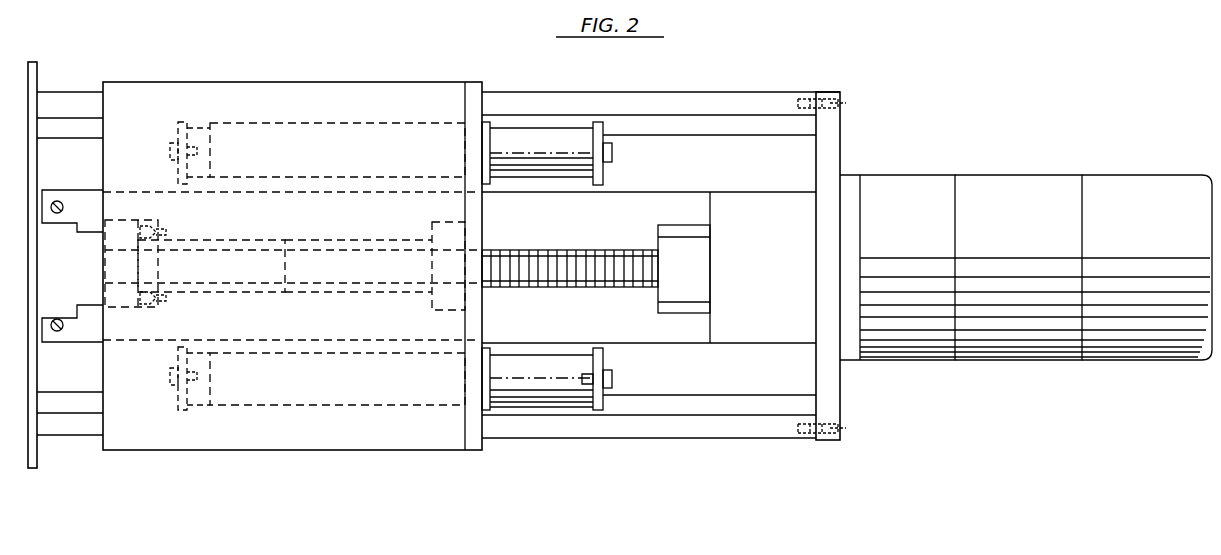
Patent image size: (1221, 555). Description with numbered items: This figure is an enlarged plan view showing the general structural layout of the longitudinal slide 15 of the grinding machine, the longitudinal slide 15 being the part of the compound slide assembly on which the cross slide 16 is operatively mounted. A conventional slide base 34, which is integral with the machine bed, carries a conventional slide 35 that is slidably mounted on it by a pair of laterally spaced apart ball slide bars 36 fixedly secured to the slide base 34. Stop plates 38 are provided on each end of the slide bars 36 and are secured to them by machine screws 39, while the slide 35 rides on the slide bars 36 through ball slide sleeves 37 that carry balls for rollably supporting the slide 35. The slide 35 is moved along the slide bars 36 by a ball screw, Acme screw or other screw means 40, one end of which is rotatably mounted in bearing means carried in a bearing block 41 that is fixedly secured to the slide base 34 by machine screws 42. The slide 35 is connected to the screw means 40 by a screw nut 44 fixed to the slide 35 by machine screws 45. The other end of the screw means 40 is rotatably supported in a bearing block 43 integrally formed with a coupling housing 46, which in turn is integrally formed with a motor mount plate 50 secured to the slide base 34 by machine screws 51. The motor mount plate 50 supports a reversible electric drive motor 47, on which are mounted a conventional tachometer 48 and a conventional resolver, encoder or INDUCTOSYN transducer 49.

The longitudinal slide 15 is at (122, 456).
The cross slide 16 is at (364, 456).
The slide base 34 is at (686, 430).
The slide 35 is at (190, 436).
The ball slide bars 36 is at (553, 140).
The ball slide sleeves 37 is at (340, 124).
The stop plates 38 is at (185, 124).
The machine screws 39 is at (170, 150).
The screw means 40 is at (572, 252).
The bearing block 41 is at (84, 200).
The machine screws 42 is at (57, 213).
The bearing block 43 is at (686, 243).
The screw nut 44 is at (258, 246).
The machine screws 45 is at (166, 232).
The coupling housing 46 is at (779, 208).
The reversible electric drive motor 47 is at (915, 190).
The tachometer 48 is at (1030, 190).
The transducer 49 is at (1150, 190).
The motor mount plate 50 is at (828, 163).
The machine screws 51 is at (846, 103).